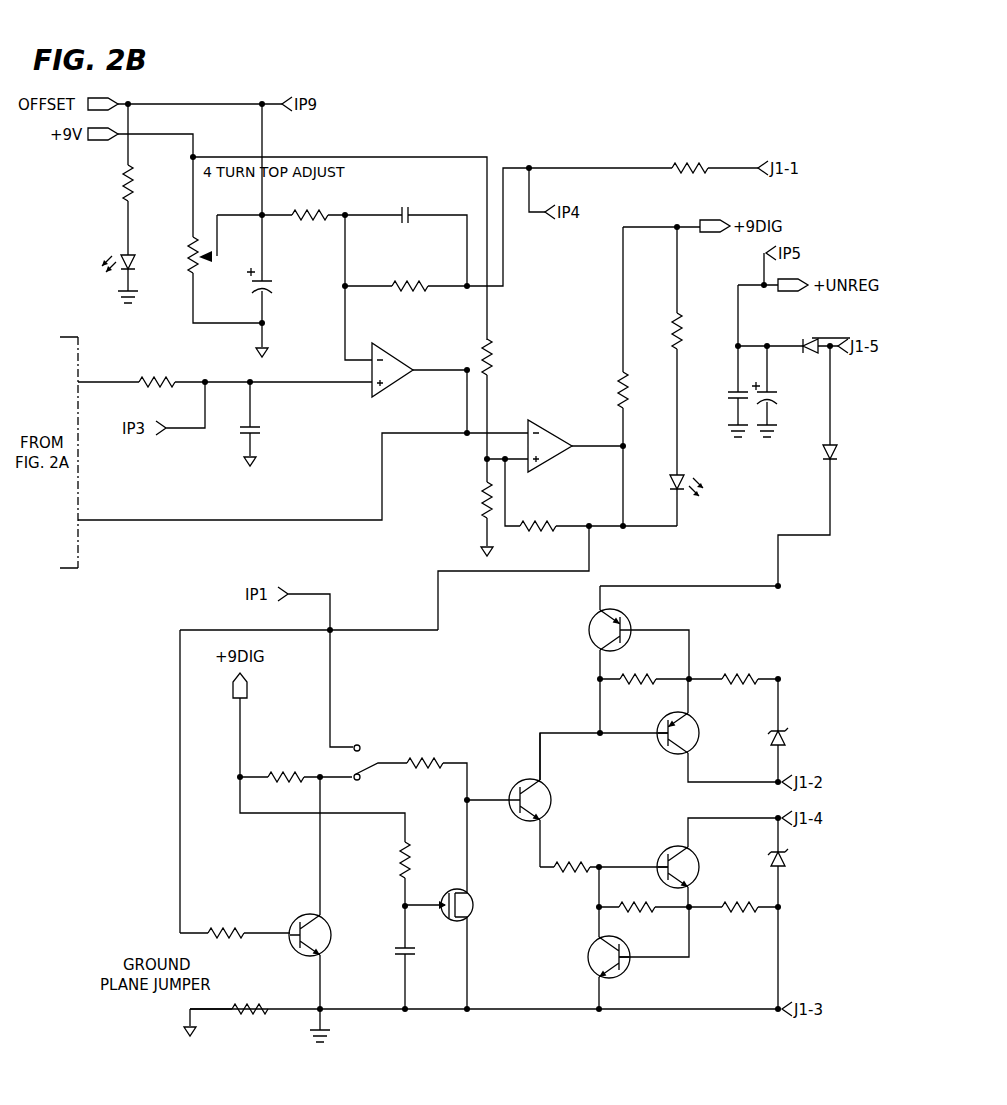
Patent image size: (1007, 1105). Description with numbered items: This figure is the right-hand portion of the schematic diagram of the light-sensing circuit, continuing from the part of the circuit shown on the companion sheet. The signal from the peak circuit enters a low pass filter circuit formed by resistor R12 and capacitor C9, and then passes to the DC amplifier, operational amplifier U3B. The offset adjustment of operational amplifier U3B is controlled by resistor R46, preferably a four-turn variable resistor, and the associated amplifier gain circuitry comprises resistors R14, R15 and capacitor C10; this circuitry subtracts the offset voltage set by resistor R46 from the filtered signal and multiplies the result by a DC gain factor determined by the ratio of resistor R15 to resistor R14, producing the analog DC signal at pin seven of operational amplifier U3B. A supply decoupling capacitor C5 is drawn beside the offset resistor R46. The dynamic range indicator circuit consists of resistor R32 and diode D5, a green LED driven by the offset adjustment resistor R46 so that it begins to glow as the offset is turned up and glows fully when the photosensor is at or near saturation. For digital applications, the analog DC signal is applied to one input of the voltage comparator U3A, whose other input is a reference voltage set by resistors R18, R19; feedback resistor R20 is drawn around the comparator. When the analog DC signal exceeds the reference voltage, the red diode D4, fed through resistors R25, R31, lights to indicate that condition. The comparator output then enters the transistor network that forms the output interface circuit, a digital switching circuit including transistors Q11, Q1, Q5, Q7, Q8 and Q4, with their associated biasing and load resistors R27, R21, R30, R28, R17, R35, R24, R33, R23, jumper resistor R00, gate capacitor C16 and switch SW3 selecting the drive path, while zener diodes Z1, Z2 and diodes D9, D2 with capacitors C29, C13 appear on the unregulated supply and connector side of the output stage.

The resistor R32 is at (109, 179).
The diode D5 is at (95, 255).
The resistor R46 is at (208, 240).
The resistor R14 is at (282, 213).
The capacitor 10UF 10V C5 is at (282, 213).
The capacitor C10 is at (406, 273).
The resistor R15 is at (507, 238).
The resistor R18 is at (620, 258).
The operational amplifier U3B is at (413, 388).
The resistor R12 is at (225, 380).
The capacitor C9 is at (279, 424).
The voltage comparator U3A is at (569, 455).
The resistor R19 is at (462, 507).
The resistor 100K R20 is at (591, 504).
The resistor 10.0K R31 is at (600, 376).
The resistor 2.21K R25 is at (651, 351).
The diode D4 is at (678, 482).
The diode 110-8050 D9 is at (809, 336).
The capacitor .1uF 20V C29 is at (721, 402).
The capacitor 1uF 35V C13 is at (781, 391).
The diode 110-8050 D2 is at (827, 466).
The transistor Q8 is at (578, 726).
The resistor 2.21K R35 is at (644, 679).
The resistor 4.7 OHM R24 is at (733, 688).
The transistor 100-4403 Q4 is at (694, 730).
The zener diode 33V 110-0758 Z1 is at (811, 730).
The resistor 2.21K R17 is at (604, 865).
The transistor Q5 is at (696, 862).
The resistor 2.21K R33 is at (644, 907).
The resistor 4.7 OHM R23 is at (733, 916).
The transistor Q7 is at (627, 958).
The zener diode 33V 110-0758 Z2 is at (811, 913).
The resistor 100K R27 is at (296, 774).
The switch SW3 is at (363, 764).
The resistor 100K R21 is at (436, 767).
The resistor 1.0 MEG R30 is at (388, 890).
The capacitor .1 UF 25V C16 is at (386, 967).
The transistor Q1 is at (477, 904).
The resistor 100K R28 is at (235, 930).
The transistor Q11 is at (291, 909).
The resistor 8 OHM ground plane jumper R00 is at (228, 1009).